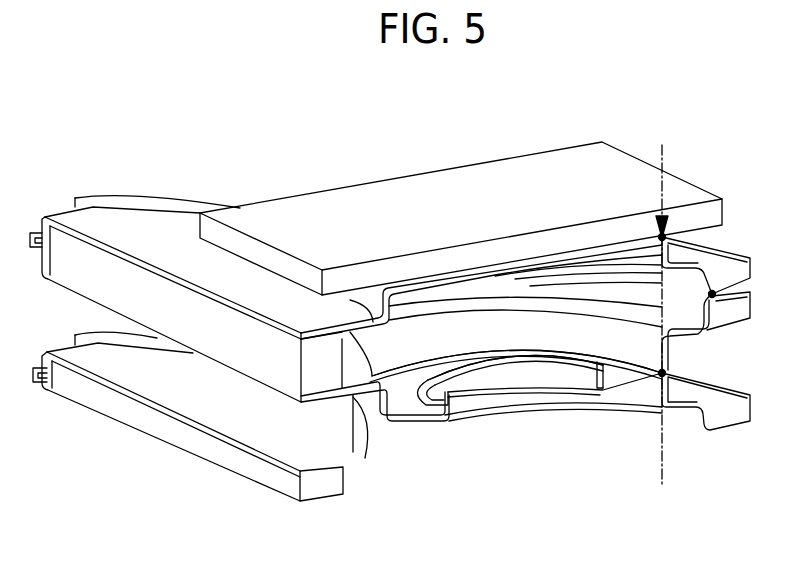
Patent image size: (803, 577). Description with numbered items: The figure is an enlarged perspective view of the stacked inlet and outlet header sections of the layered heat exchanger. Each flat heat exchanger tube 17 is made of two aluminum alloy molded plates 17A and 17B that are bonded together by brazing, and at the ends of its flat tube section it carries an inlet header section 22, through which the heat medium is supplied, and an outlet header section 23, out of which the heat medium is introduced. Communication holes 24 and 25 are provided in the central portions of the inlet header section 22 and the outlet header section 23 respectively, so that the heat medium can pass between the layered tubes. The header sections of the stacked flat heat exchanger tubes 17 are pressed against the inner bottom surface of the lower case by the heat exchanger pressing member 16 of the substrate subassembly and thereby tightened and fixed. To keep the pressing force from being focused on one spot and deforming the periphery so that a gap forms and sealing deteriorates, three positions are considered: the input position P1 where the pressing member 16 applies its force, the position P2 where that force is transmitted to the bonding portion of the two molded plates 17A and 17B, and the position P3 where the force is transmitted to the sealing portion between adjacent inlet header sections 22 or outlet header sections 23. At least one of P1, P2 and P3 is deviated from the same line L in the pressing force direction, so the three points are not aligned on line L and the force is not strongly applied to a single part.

The heat exchanger pressing member 16 is at (539, 165).
The flat heat exchanger tube 17 is at (153, 224).
The molded plate 17A is at (490, 272).
The molded plate 17B is at (315, 398).
The inlet header section 22 is at (603, 418).
The outlet header section 23 is at (517, 363).
The communication hole 24 is at (533, 368).
The communication hole 25 is at (515, 367).
The same line in the pressing force direction L is at (665, 152).
The input position of the pressing force P1 is at (656, 232).
The position where pressing force is transmitted to the bonding portion P2 is at (714, 290).
The position where pressing force is transmitted to the sealing portion P3 is at (665, 372).